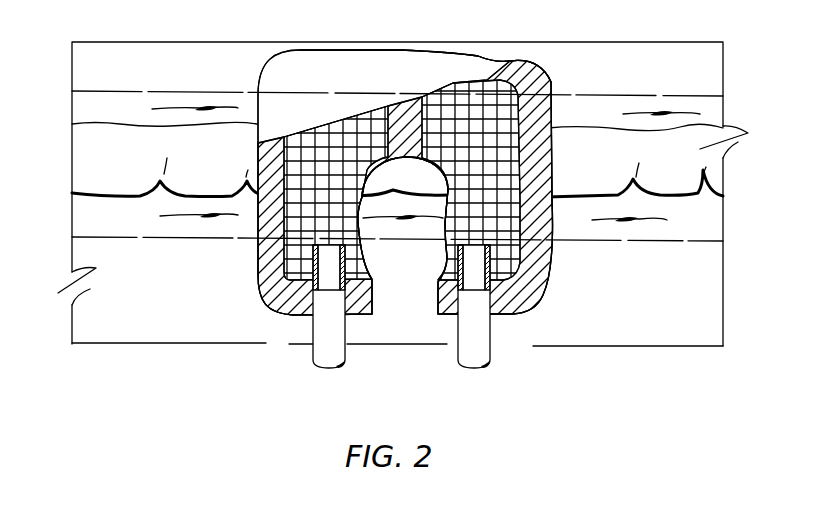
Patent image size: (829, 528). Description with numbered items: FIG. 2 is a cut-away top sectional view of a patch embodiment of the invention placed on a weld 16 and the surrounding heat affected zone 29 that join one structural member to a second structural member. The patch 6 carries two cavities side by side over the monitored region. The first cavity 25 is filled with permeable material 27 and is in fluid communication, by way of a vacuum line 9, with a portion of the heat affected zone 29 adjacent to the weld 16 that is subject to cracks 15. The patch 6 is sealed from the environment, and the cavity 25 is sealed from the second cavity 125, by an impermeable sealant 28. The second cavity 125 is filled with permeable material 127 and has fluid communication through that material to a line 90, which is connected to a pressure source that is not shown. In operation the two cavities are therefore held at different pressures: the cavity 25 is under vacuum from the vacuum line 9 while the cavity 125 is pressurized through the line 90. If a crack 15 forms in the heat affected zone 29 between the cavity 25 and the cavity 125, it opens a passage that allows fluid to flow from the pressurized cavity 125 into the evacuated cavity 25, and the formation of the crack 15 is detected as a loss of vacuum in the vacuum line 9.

The patch 6 is at (396, 179).
The impermeable sealant 28 is at (485, 65).
The cavity 25 is at (306, 243).
The cavity 125 is at (512, 244).
The permeable material 27 is at (268, 273).
The permeable material 127 is at (502, 273).
The crack 15 is at (417, 224).
The vacuum line 9 is at (320, 334).
The line 90 is at (474, 342).
The weld 16 is at (706, 184).
The heat affected zone 29 is at (162, 239).